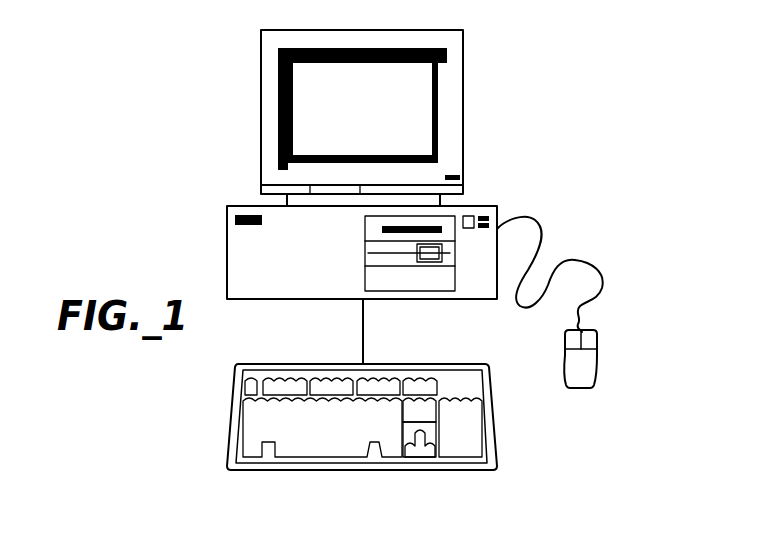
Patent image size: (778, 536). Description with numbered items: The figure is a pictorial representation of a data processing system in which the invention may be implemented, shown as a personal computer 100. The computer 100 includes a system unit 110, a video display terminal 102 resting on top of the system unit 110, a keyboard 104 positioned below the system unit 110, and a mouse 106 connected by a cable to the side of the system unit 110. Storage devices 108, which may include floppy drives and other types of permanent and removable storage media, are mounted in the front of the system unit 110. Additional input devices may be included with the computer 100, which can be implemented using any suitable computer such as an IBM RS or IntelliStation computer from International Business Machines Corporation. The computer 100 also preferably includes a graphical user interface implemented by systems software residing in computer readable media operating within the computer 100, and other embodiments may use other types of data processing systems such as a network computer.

The computer 100 is at (578, 160).
The video display terminal 102 is at (465, 108).
The keyboard 104 is at (495, 442).
The mouse 106 is at (600, 353).
The storage devices 108 is at (365, 260).
The system unit 110 is at (362, 285).